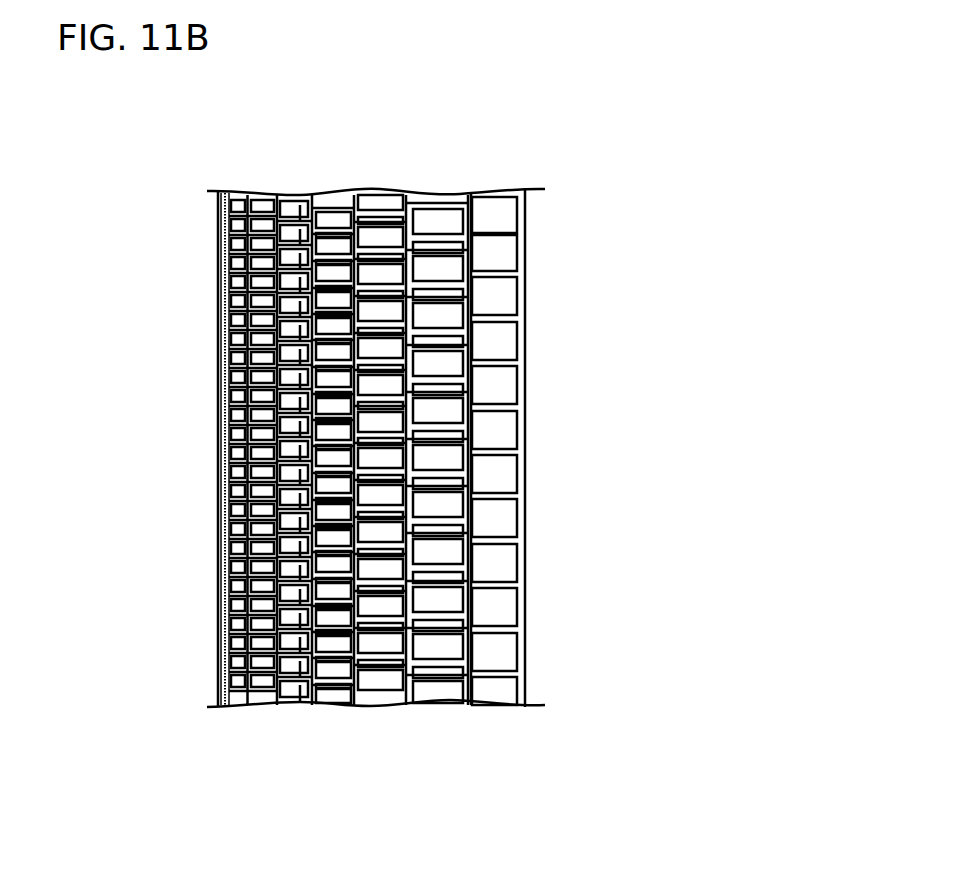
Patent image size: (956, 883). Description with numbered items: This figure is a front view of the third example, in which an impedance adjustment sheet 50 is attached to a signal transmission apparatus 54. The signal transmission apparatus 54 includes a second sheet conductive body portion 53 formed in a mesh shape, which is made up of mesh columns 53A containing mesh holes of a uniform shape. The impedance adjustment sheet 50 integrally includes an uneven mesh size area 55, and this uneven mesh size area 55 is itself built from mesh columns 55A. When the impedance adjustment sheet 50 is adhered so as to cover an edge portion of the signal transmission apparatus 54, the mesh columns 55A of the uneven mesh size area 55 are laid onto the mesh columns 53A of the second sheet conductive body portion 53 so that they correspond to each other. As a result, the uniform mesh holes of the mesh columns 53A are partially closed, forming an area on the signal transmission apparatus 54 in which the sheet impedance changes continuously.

The impedance adjustment sheet 50 is at (204, 309).
The second sheet conductive body portion 53 is at (526, 328).
The mesh columns 53A is at (385, 205).
The signal transmission apparatus 54 is at (572, 227).
The uneven mesh size area 55 is at (248, 702).
The mesh columns 55A is at (340, 690).